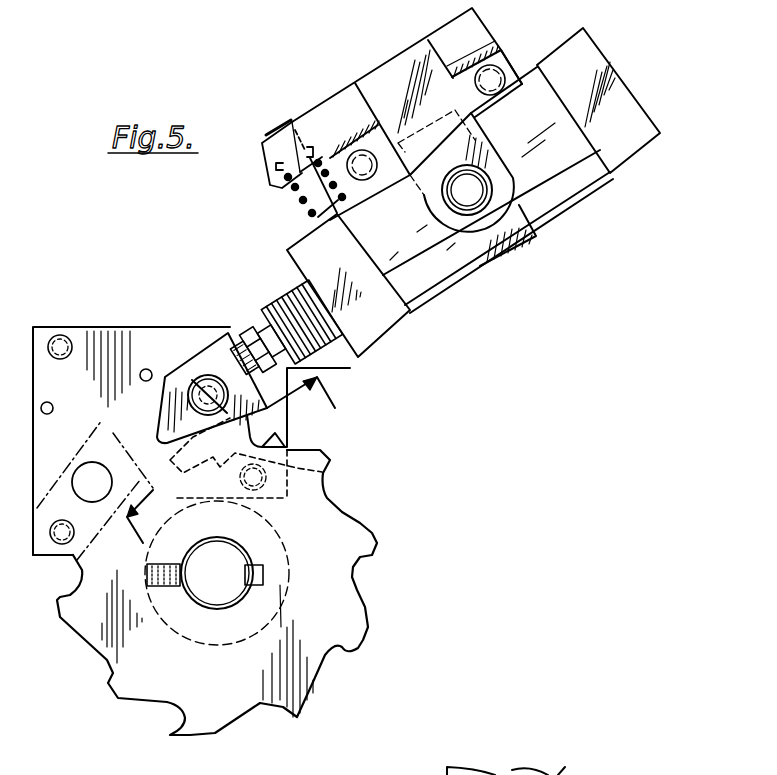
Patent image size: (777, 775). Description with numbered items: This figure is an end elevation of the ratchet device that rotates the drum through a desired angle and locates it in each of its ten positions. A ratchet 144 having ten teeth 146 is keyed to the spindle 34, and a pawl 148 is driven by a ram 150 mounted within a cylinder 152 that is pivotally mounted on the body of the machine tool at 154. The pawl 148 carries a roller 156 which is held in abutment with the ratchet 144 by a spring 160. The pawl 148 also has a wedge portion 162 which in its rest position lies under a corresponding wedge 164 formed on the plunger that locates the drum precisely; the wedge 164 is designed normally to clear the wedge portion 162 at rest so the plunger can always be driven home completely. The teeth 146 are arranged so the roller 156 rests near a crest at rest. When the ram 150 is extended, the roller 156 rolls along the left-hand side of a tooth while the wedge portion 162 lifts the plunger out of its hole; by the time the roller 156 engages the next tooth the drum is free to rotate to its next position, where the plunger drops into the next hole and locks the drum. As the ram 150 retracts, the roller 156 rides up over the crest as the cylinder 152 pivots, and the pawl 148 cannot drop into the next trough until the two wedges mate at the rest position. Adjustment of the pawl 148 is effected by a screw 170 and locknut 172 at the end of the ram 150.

The spindle 34 is at (232, 561).
The ratchet 144 is at (195, 670).
The teeth 146 is at (167, 722).
The pawl 148 is at (183, 350).
The ram 150 is at (286, 364).
The cylinder 152 is at (450, 250).
The pivot mounting 154 is at (475, 193).
The roller 156 is at (196, 385).
The spring 160 is at (312, 195).
The wedge portion 162 is at (270, 410).
The wedge 164 is at (322, 472).
The screw 170 is at (253, 327).
The locknut 172 is at (228, 327).